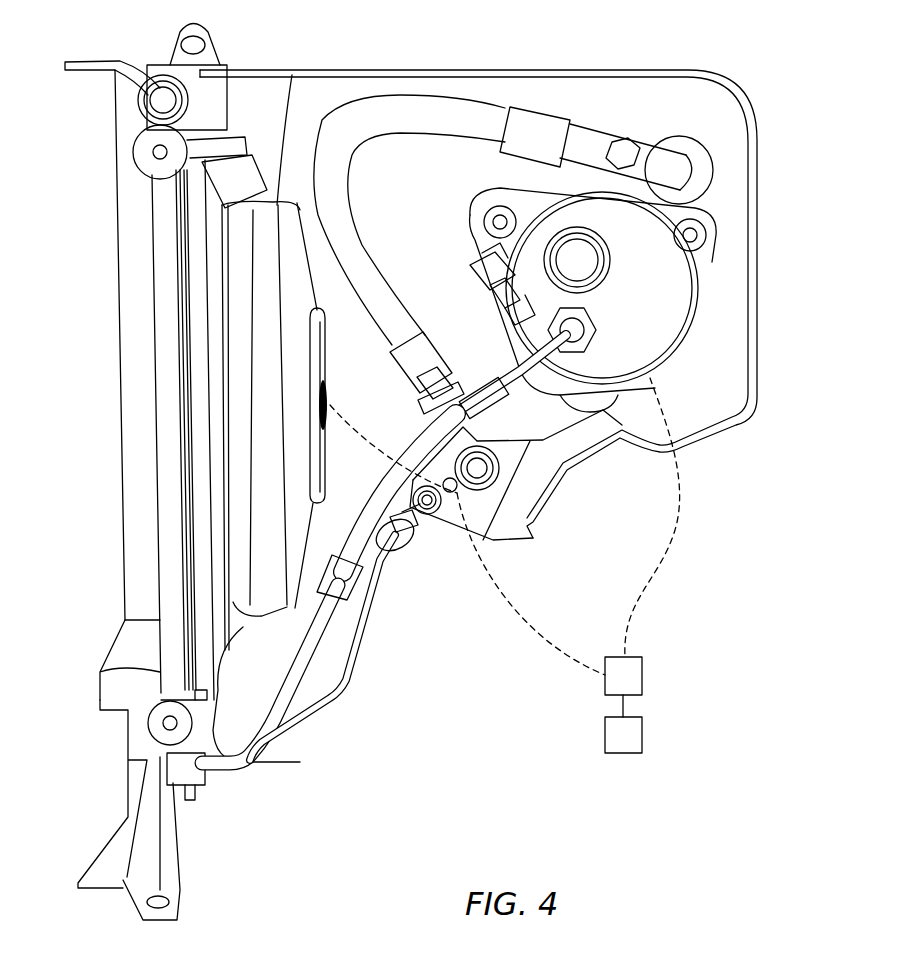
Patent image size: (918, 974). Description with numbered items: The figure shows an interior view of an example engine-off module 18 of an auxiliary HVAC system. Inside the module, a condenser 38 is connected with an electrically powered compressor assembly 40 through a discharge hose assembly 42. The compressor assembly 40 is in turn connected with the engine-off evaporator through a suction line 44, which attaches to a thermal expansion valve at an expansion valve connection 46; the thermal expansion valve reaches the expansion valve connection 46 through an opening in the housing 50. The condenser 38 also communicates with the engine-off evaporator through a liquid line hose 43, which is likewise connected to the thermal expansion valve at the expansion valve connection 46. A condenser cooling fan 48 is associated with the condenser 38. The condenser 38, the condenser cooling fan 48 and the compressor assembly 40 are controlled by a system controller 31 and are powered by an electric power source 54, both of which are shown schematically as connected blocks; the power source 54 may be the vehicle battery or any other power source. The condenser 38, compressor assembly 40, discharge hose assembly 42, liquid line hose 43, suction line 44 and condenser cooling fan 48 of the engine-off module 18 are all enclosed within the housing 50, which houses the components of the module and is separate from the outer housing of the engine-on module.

The engine-off module 18 is at (787, 185).
The system controller 31 is at (505, 537).
The condenser 38 is at (181, 313).
The electrically powered compressor assembly 40 is at (677, 305).
The discharge hose assembly 42 is at (367, 598).
The liquid line hose 43 is at (345, 587).
The suction line 44 is at (435, 110).
The expansion valve connection 46 is at (457, 492).
The condenser cooling fan 48 is at (292, 75).
The housing 50 is at (597, 71).
The electric power source 54 is at (623, 726).